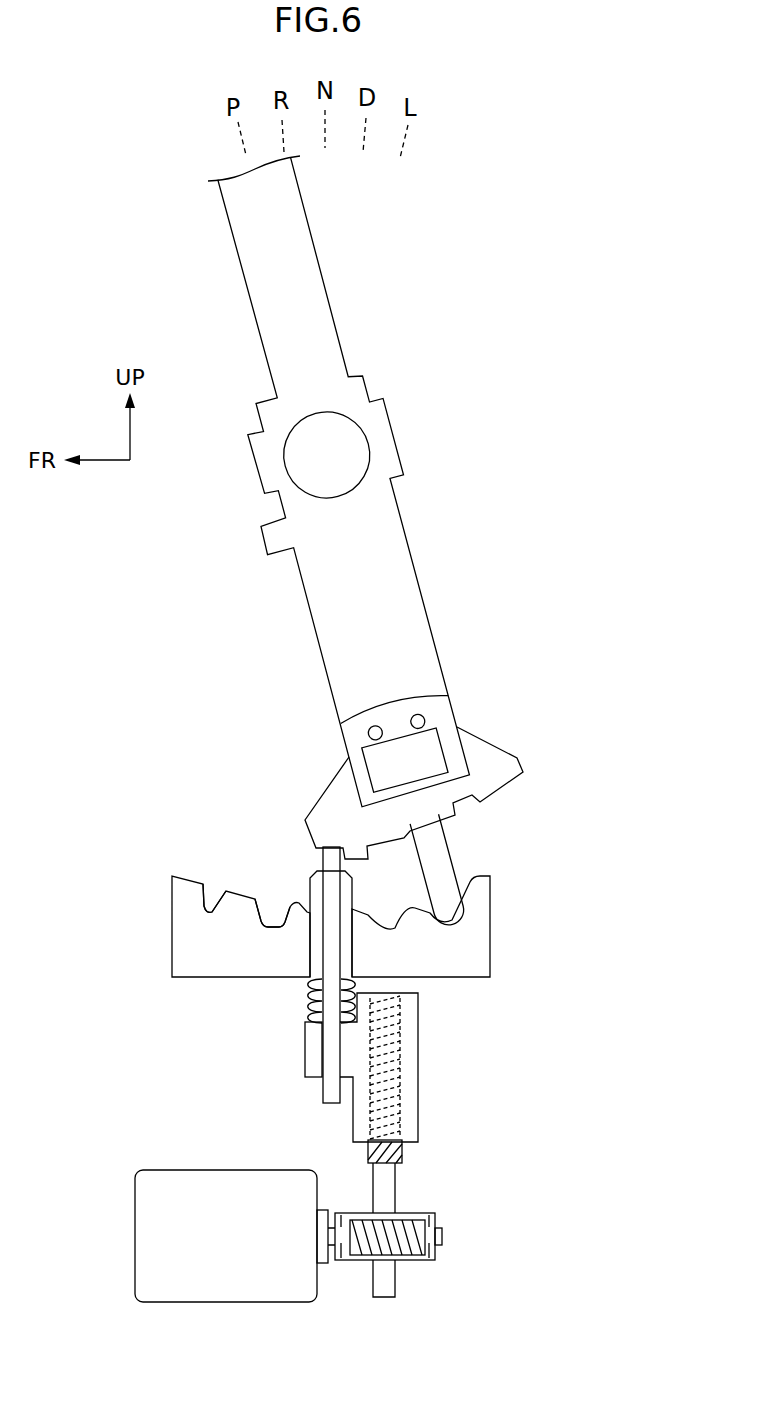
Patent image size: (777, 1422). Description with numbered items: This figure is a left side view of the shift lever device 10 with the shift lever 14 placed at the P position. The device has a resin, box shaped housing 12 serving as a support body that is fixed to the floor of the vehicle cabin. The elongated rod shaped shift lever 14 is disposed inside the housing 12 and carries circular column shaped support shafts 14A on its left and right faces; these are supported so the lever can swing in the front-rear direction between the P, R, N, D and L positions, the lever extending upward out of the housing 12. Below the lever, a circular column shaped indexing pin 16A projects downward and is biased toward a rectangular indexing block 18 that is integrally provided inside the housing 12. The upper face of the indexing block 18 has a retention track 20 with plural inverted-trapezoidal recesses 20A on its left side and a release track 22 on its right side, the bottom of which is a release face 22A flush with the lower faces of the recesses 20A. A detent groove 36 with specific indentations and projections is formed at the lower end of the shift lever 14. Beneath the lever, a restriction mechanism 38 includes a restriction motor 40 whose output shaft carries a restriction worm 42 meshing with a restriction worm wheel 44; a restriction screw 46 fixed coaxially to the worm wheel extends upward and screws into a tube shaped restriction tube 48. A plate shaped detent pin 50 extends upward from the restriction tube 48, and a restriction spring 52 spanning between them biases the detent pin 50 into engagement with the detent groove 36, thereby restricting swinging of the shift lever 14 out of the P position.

The shift lever device 10 is at (122, 218).
The housing 12 is at (253, 892).
The shift lever 14 is at (336, 300).
The support shafts 14A is at (350, 448).
The indexing pin 16A is at (445, 840).
The indexing block 18 is at (171, 943).
The retention track 20 is at (358, 906).
The recesses 20A is at (207, 893).
The release track 22 is at (228, 887).
The release face 22A is at (275, 910).
The detent groove 36 is at (512, 789).
The restriction mechanism 38 is at (205, 1070).
The restriction motor 40 is at (193, 1170).
The restriction worm 42 is at (365, 1215).
The restriction worm wheel 44 is at (430, 1215).
The restriction screw 46 is at (400, 1150).
The restriction tube 48 is at (418, 1050).
The detent pin 50 is at (305, 855).
The restriction spring 52 is at (304, 993).